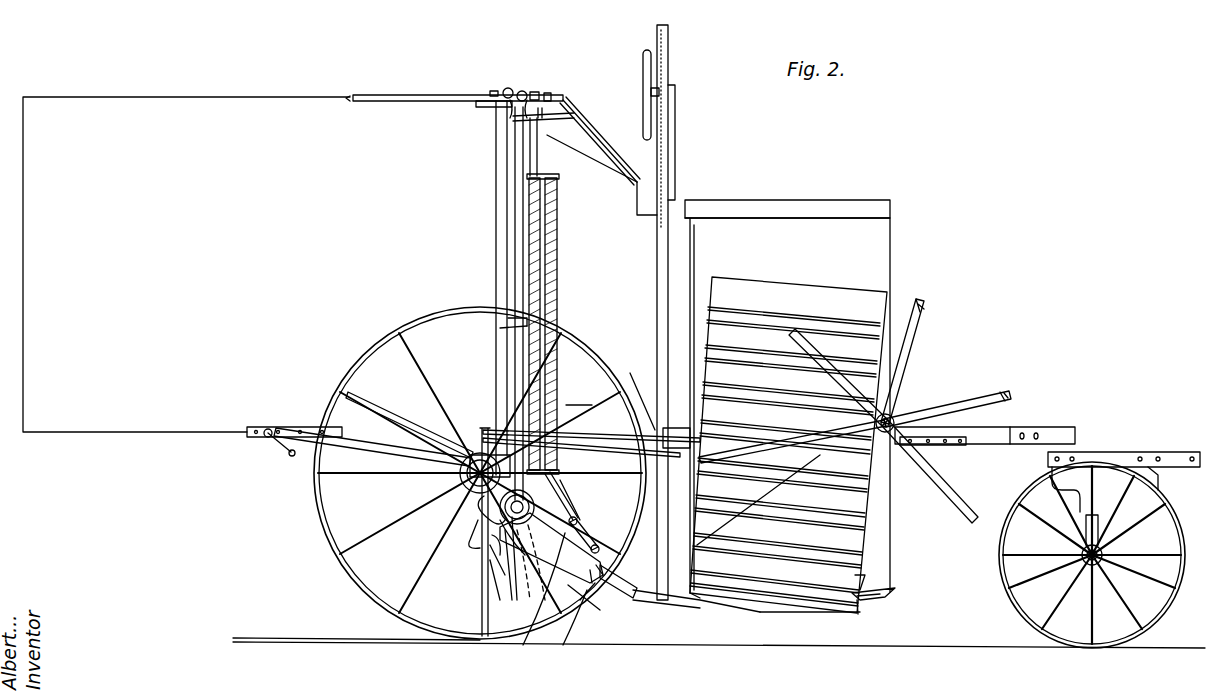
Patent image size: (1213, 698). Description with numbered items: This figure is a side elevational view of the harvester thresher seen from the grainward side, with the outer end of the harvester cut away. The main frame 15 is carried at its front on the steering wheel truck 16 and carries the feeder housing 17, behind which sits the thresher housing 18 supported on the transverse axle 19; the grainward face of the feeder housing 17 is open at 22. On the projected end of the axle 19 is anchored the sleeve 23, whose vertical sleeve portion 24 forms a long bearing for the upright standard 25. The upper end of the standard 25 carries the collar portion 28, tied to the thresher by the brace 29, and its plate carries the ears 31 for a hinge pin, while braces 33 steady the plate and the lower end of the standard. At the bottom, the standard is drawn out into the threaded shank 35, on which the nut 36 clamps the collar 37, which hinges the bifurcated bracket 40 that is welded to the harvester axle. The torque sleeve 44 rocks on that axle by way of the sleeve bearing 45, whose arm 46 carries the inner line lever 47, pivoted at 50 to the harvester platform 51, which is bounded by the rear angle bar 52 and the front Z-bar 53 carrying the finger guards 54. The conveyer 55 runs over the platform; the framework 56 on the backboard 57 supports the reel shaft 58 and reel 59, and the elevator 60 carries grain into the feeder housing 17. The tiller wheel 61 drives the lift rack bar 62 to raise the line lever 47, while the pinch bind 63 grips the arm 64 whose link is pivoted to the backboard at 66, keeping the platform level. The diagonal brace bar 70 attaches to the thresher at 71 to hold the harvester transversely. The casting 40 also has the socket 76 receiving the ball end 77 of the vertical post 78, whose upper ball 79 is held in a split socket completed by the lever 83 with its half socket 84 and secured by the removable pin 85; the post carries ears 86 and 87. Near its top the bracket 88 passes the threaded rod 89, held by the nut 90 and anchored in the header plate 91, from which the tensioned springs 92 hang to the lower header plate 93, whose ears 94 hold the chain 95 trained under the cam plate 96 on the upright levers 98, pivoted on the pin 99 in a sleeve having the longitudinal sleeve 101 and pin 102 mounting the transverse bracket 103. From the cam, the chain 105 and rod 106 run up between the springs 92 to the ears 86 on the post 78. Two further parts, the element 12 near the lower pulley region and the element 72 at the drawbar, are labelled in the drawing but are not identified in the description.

The pulley 12 is at (534, 505).
The main frame 15 is at (995, 432).
The steering wheel truck 16 is at (1150, 502).
The feeder housing 17 is at (825, 208).
The thresher or separator housing 18 is at (128, 420).
The transverse axle 19 is at (805, 605).
The opening 22 is at (880, 244).
The sleeve 23 is at (466, 480).
The vertical sleeve portion 24 is at (470, 466).
The upright standard 25 is at (494, 252).
The collar portion 28 is at (552, 97).
The brace 29 is at (400, 95).
The ears 31 is at (536, 92).
The brace 33 is at (325, 428).
The threaded shank 35 is at (495, 565).
The nut 36 is at (500, 550).
The collar 37 is at (500, 535).
The bifurcated bracket 40 is at (470, 538).
The torque sleeve or pipe 44 is at (489, 560).
The sleeve bearing 45 is at (475, 482).
The arm or bracket 46 is at (500, 580).
The inner line lever 47 is at (686, 608).
The pivot 50 is at (768, 615).
The harvester platform 51 is at (848, 614).
The rear transverse angle bar 52 is at (700, 600).
The front transverse Z-bar 53 is at (870, 598).
The finger guards 54 is at (620, 434).
The conveyer 55 is at (860, 575).
The framework 56 is at (938, 446).
The backboard 57 is at (645, 420).
The harvester reel shaft 58 is at (895, 418).
The harvester reel 59 is at (975, 400).
The elevator or spout conveyer 60 is at (882, 330).
The tiller wheel 61 is at (648, 72).
The lift rack bar 62 is at (665, 147).
The pinch bind 63 is at (480, 512).
The arm 64 is at (455, 418).
The pivot 66 is at (690, 487).
The diagonal brace bar 70 is at (290, 454).
The connection point 71 is at (262, 436).
The drawbar 72 is at (266, 428).
The socket 76 is at (528, 600).
The ball-shaped lower end 77 is at (550, 575).
The vertical post 78 is at (514, 220).
The ball-shaped upper end 79 is at (522, 90).
The lever 83 is at (480, 107).
The half ball socket portion 84 is at (506, 88).
The removable pin 85 is at (493, 91).
The ears 86 is at (525, 318).
The ears 87 is at (520, 326).
The bracket 88 is at (520, 125).
The threaded rod 89 is at (528, 160).
The nut 90 is at (565, 105).
The header plate 91 is at (560, 176).
The tensioned springs 92 is at (540, 215).
The lower header plate 93 is at (575, 500).
The ears 94 is at (580, 514).
The chain 95 is at (590, 522).
The cam plate 96 is at (598, 546).
The upright levers 98 is at (535, 630).
The pin 99 is at (590, 598).
The longitudinal sleeve 101 is at (600, 604).
The longitudinal pin 102 is at (575, 620).
The transverse bracket 103 is at (590, 612).
The chain 105 is at (570, 452).
The rod 106 is at (560, 435).